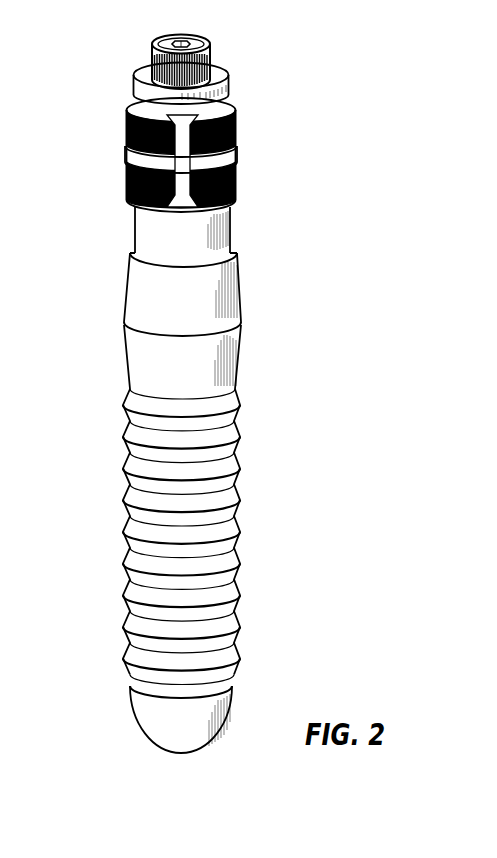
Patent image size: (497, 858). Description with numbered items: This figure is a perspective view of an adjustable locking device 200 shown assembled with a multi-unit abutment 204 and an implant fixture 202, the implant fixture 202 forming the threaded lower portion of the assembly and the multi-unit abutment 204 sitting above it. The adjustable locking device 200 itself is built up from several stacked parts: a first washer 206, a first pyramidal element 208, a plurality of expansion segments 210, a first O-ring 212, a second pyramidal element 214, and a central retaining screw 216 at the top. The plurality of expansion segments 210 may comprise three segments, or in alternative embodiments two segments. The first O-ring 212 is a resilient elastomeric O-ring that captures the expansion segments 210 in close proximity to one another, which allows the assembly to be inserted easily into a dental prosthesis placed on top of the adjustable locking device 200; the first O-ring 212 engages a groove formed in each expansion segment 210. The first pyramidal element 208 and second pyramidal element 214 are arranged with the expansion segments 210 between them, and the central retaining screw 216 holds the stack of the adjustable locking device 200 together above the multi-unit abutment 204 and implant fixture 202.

The adjustable locking device 200 is at (212, 385).
The implant fixture 202 is at (220, 539).
The multi-unit abutment 204 is at (138, 307).
The first washer 206 is at (205, 243).
The first pyramidal element 208 is at (135, 208).
The expansion segments 210 is at (128, 125).
The first O-ring 212 is at (128, 152).
The second pyramidal element 214 is at (133, 96).
The central retaining screw 216 is at (220, 48).